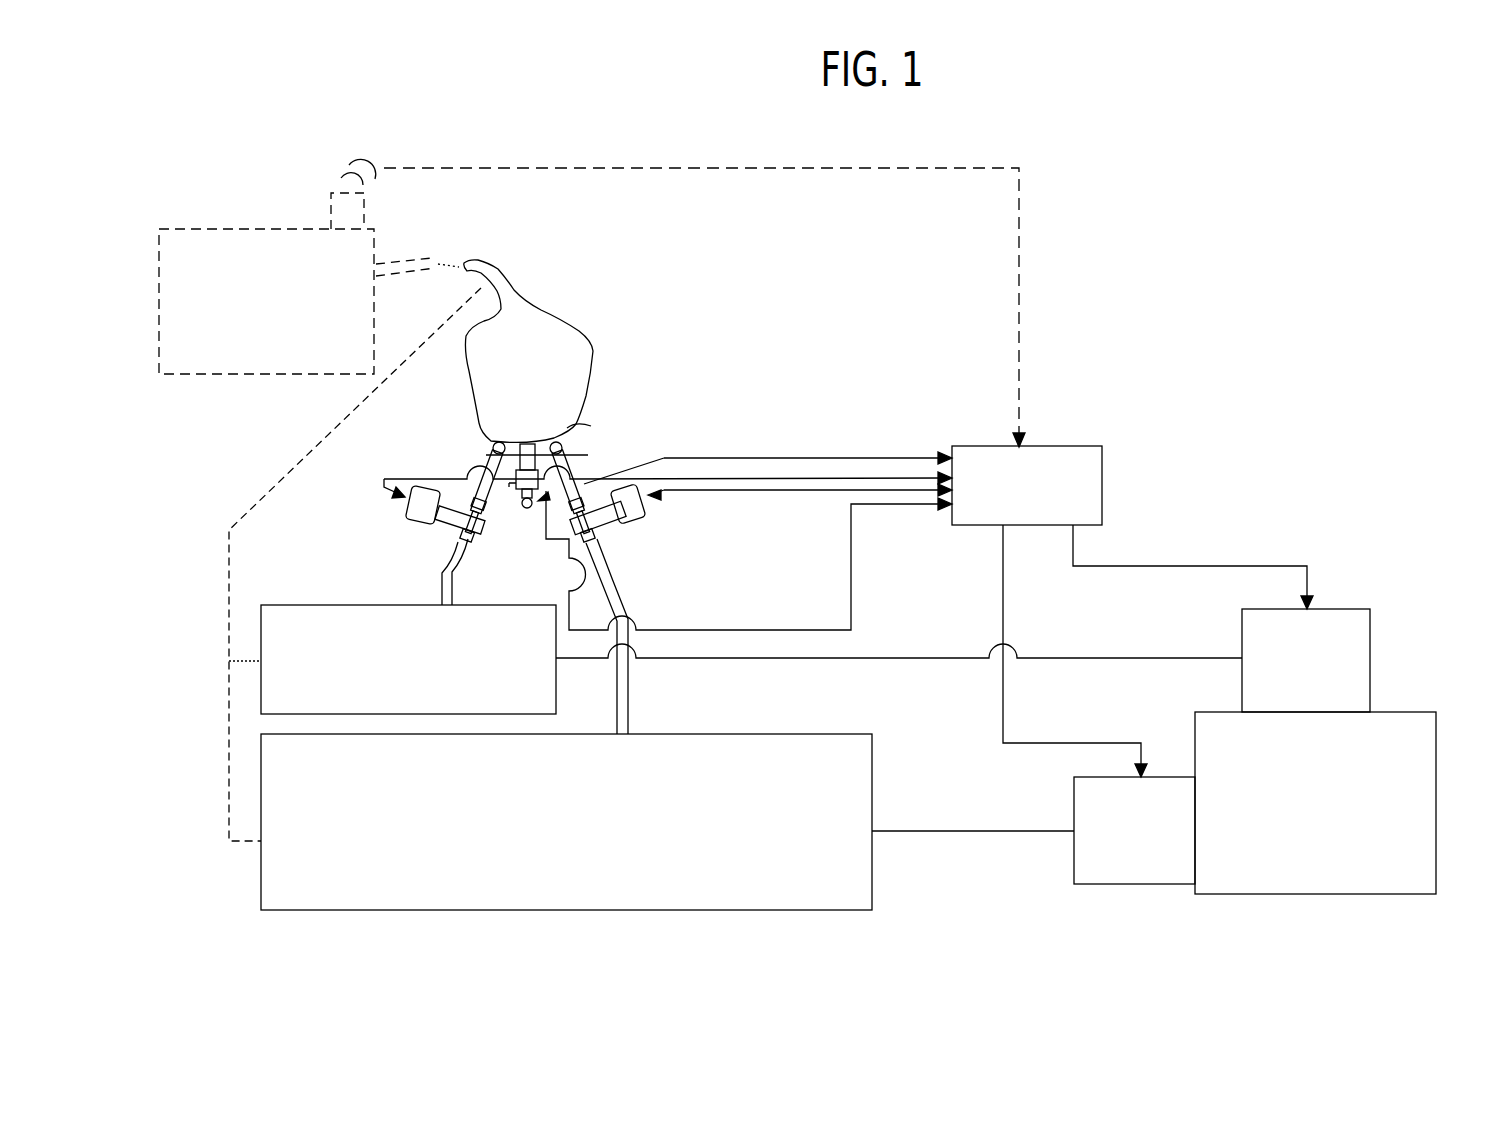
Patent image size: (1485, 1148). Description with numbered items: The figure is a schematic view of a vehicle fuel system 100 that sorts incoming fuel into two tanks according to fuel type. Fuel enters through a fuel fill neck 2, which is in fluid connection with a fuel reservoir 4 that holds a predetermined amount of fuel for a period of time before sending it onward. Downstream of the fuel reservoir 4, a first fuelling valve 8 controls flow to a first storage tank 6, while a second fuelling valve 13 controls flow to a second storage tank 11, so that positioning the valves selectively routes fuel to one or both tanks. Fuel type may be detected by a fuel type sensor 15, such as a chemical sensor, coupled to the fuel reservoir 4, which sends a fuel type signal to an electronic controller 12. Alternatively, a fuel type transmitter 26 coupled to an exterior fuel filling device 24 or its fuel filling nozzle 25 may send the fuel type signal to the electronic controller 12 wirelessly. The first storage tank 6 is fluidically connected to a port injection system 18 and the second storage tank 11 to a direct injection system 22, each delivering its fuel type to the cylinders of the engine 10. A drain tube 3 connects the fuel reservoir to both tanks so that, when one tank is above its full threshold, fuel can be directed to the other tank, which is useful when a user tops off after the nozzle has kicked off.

The fuel system 100 is at (1150, 148).
The fuel filling device 24 is at (185, 228).
The fuel type transmitter 26 is at (364, 208).
The fuel filling nozzle 25 is at (388, 258).
The fuel fill neck 2 is at (499, 270).
The fuel reservoir 4 is at (568, 443).
The fuel type sensor 15 is at (511, 485).
The second fuelling valve 13 is at (404, 506).
The first fuelling valve 8 is at (624, 485).
The drain tube 3 is at (275, 486).
The second storage tank 11 is at (266, 603).
The first storage tank 6 is at (692, 732).
The electronic controller 12 is at (1102, 503).
The direct injection system 22 is at (1370, 632).
The engine 10 is at (1375, 893).
The port injection system 18 is at (1147, 883).